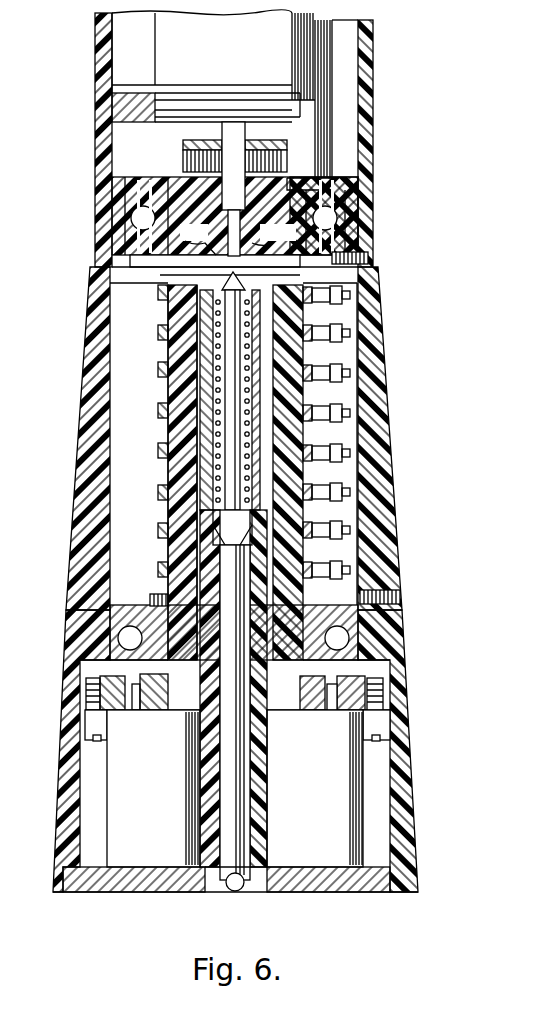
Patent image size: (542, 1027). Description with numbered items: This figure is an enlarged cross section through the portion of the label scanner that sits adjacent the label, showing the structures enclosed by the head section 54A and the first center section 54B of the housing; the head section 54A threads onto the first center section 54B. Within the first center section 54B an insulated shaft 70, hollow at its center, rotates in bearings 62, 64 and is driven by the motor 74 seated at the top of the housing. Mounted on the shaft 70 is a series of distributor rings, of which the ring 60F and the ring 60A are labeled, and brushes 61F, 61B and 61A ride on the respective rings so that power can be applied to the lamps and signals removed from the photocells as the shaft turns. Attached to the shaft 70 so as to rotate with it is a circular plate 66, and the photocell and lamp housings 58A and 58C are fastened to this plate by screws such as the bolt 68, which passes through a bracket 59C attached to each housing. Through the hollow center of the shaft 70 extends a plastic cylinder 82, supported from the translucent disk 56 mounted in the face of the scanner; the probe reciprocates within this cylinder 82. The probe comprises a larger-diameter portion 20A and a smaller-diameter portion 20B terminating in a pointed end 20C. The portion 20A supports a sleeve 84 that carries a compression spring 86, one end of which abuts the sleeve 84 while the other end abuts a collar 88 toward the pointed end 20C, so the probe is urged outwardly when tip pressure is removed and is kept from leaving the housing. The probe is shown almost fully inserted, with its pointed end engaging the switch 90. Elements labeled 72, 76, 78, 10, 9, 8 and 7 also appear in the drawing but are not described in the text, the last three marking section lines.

The motor 74 is at (160, 28).
The flange 72 is at (134, 93).
The piston head 76 is at (232, 137).
The threaded sleeve 78 is at (183, 158).
The rod 10 is at (233, 238).
The switch 90 is at (198, 238).
The pointed end 20C is at (274, 233).
The section line 9- 9 is at (75, 300).
The bearing 64 is at (97, 304).
The distributor ring 60F is at (160, 310).
The collar 88 is at (233, 290).
The brush 61F is at (346, 316).
The section line 8- 8 is at (70, 412).
The compression spring 86 is at (200, 391).
The probe portion 20B is at (225, 437).
The brush 61B is at (348, 436).
The insulated shaft 70 is at (170, 474).
The first center section 54B is at (80, 507).
The sleeve 84 is at (217, 514).
The distributor ring 60A is at (160, 572).
The bearing 62 is at (92, 600).
The brush 61A is at (318, 574).
The circular plate 66 is at (92, 678).
The head section 54A is at (70, 712).
The bracket 59C is at (104, 713).
The screw 68 is at (92, 735).
The plastic cylinder 82 is at (262, 784).
The housing 58A is at (107, 815).
The probe portion 20A is at (250, 834).
The section line 7- 7 is at (470, 898).
The translucent disk 56 is at (165, 872).
The housing 58C is at (318, 870).